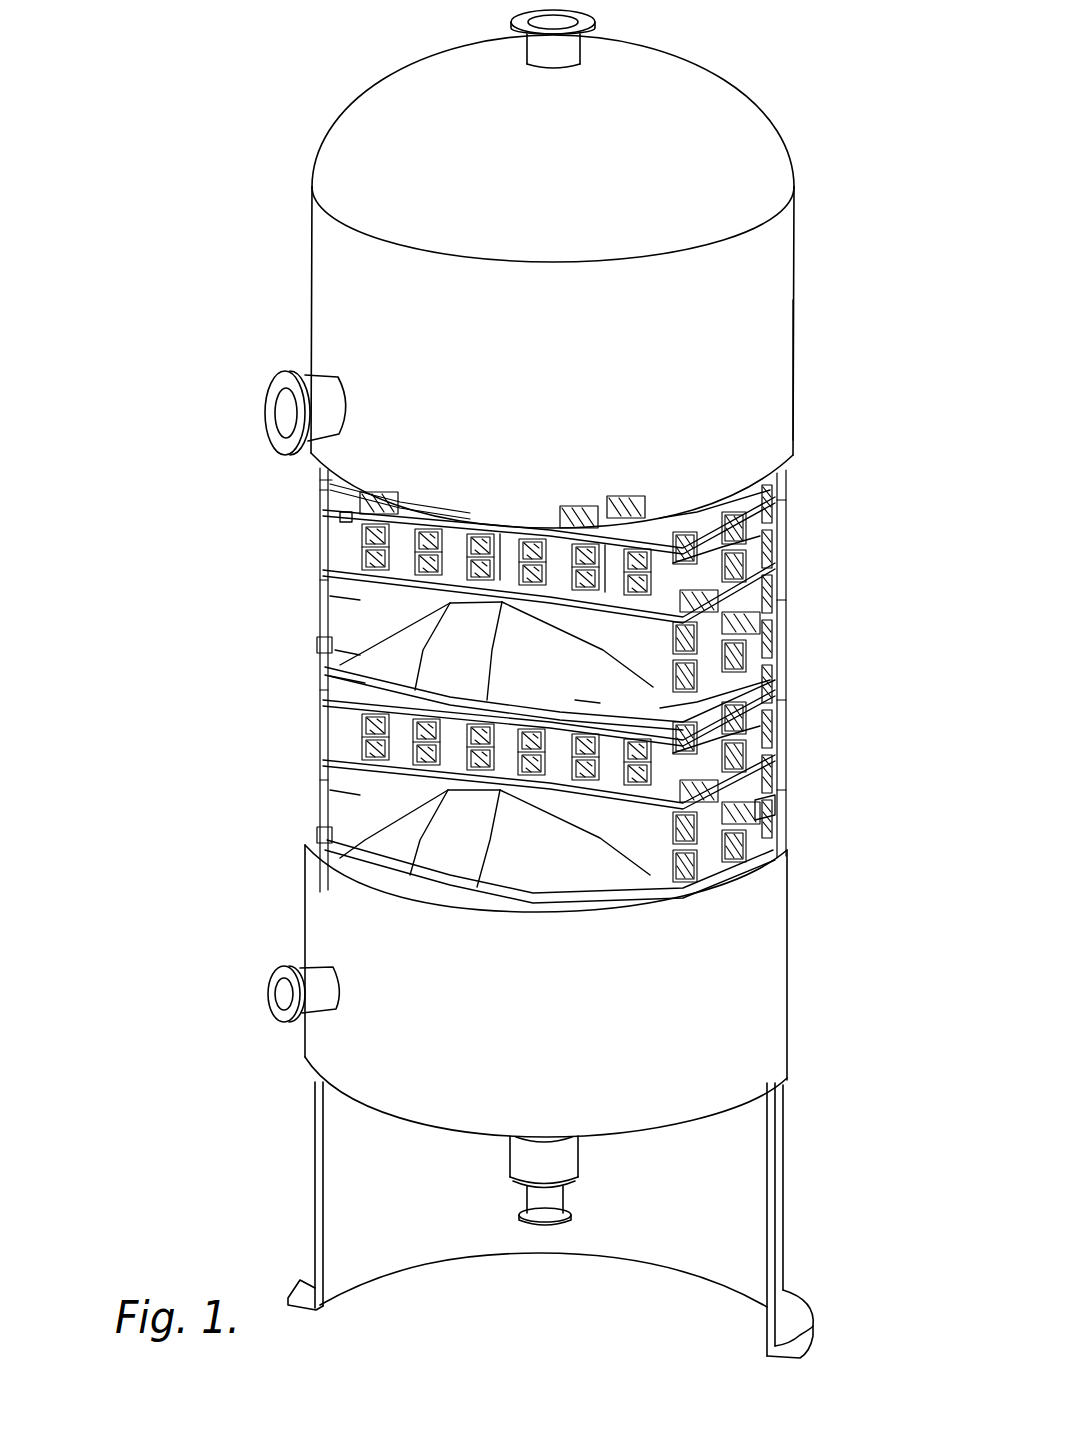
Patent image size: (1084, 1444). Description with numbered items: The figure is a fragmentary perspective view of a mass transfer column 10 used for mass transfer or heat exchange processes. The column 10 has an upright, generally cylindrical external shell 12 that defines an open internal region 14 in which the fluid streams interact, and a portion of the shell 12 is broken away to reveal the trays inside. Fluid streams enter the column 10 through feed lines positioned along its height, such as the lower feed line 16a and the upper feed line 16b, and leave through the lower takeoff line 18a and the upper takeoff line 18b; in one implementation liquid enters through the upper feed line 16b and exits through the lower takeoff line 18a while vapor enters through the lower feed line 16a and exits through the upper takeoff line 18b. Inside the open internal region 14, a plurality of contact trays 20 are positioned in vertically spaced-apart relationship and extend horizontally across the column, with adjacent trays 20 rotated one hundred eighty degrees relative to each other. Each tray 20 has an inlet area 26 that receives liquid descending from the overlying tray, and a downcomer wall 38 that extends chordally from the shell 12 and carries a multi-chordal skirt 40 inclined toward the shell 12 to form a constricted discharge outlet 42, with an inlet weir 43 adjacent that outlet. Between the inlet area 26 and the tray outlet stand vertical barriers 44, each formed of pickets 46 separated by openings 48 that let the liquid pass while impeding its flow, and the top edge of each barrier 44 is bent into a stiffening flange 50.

The mass transfer column 10 is at (800, 297).
The shell 12 is at (780, 441).
The open internal region 14 is at (770, 808).
The lower feed line 16a is at (300, 978).
The upper feed line 16b is at (318, 392).
The lower takeoff line 18a is at (548, 1205).
The upper takeoff line 18b is at (570, 52).
The contact tray 20 is at (762, 583).
The inlet area 26 is at (356, 680).
The downcomer wall 38 is at (348, 596).
The multi-chordal skirt 40 is at (362, 630).
The downcomer discharge outlet 42 is at (352, 660).
The inlet weir 43 is at (585, 700).
The barrier 44 is at (352, 537).
The picket 46 is at (505, 556).
The opening 48 is at (590, 558).
The stiffening flange 50 is at (346, 518).